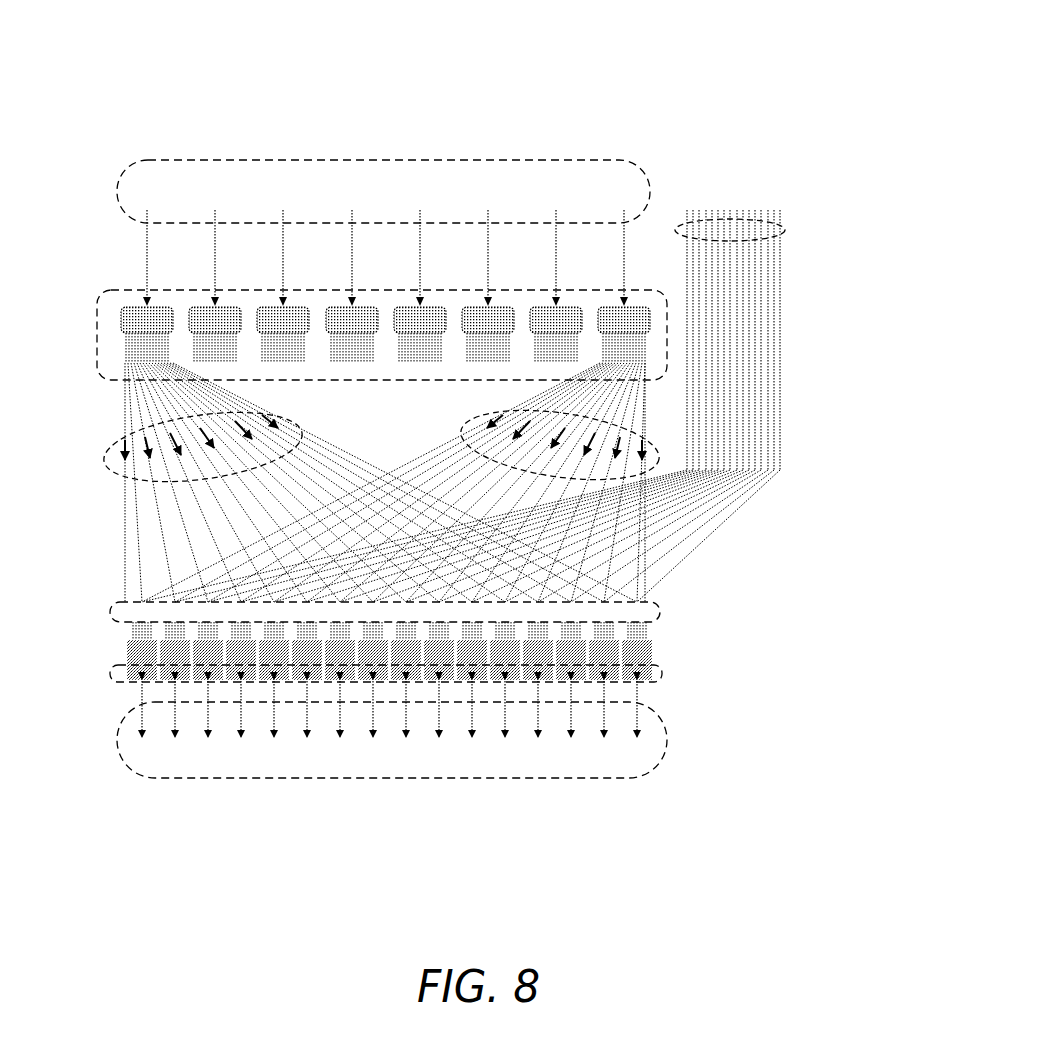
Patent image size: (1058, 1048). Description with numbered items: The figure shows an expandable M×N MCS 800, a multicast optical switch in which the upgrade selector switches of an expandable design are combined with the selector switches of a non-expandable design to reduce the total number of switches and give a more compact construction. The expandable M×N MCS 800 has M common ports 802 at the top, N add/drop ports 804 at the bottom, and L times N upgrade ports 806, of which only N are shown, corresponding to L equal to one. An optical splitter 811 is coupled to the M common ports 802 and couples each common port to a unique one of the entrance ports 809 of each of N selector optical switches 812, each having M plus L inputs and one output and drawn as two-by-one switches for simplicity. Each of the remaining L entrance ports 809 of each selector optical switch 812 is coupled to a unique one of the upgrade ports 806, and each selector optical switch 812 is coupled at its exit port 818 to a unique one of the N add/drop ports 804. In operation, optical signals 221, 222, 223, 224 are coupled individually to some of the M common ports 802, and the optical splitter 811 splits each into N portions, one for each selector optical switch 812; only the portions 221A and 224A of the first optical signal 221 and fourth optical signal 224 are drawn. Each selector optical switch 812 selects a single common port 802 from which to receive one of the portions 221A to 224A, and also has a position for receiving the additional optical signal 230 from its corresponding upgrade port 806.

The expandable M×N MCS 800 is at (664, 42).
The M common ports 802 is at (412, 160).
The N add/drop ports 804 is at (246, 778).
The upgrade ports 806 is at (785, 232).
The entrance ports 809 is at (660, 605).
The optical splitter 811 is at (118, 380).
The (M+L)×1 selector optical switches 812 is at (672, 650).
The exit port 818 is at (652, 683).
The first optical signal 221 is at (137, 266).
The second optical signal 222 is at (271, 275).
The third optical signal 223 is at (473, 277).
The fourth optical signal 224 is at (610, 282).
The portions of the first optical signal 221A is at (122, 473).
The portions of the fourth optical signal 224A is at (466, 424).
The additional optical signal 230 is at (483, 387).